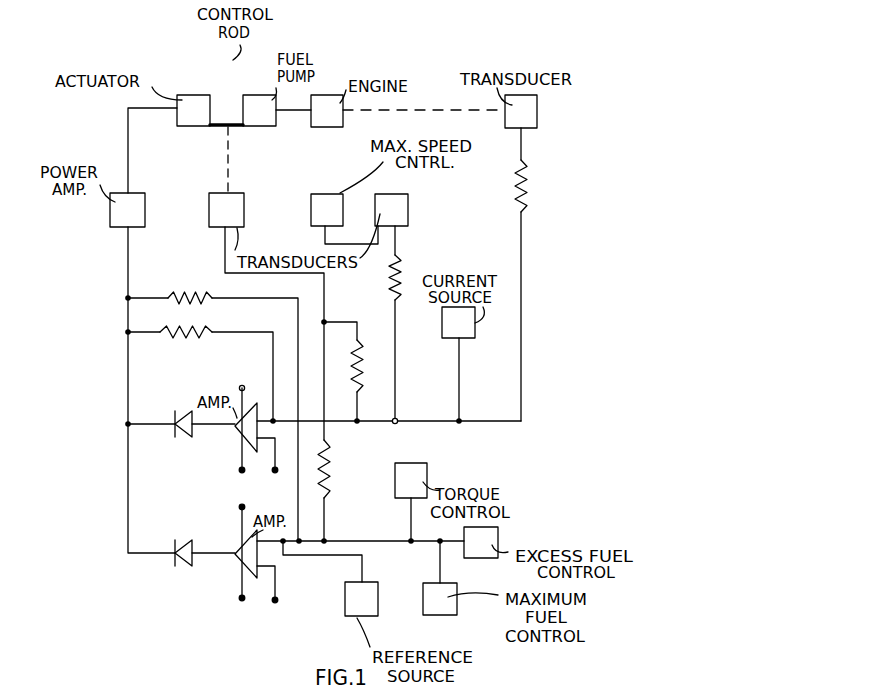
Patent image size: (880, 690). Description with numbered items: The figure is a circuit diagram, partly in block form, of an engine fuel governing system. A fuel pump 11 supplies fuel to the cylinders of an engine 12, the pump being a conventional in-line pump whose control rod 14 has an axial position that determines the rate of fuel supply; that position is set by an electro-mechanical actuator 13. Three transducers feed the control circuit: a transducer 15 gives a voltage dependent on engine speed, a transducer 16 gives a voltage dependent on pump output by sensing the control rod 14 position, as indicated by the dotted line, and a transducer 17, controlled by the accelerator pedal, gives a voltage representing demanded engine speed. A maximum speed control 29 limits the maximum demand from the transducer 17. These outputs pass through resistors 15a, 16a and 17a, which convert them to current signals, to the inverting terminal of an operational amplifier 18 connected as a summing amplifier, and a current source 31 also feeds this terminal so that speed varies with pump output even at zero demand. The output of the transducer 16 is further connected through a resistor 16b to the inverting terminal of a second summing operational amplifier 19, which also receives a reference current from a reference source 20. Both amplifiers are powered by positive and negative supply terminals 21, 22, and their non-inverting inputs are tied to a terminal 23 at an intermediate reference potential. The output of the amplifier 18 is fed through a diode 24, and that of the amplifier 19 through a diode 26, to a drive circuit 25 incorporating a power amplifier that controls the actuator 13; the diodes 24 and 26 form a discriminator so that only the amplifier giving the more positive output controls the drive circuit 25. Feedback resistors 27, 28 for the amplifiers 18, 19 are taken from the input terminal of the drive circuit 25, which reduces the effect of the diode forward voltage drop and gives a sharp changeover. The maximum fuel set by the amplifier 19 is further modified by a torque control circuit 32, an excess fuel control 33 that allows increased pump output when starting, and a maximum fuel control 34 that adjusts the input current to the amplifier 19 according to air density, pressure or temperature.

The fuel pump 11 is at (257, 103).
The engine 12 is at (329, 103).
The electro-mechanical actuator 13 is at (192, 102).
The control rod 14 is at (222, 118).
The transducer 15 is at (528, 113).
The resistor 15a is at (527, 190).
The transducer 16 is at (242, 202).
The resistor 16a is at (363, 387).
The resistor 16b is at (333, 492).
The transducer 17 is at (398, 210).
The resistor 17a is at (403, 262).
The operational amplifier 18 is at (238, 436).
The operational amplifier 19 is at (238, 563).
The reference source 20 is at (360, 608).
The positive supply terminal 21 is at (239, 387).
The negative supply terminal 22 is at (240, 472).
The terminal 23 is at (275, 472).
The diode 24 is at (177, 448).
The drive circuit 25 is at (130, 202).
The diode 26 is at (185, 573).
The feedback resistor 27 is at (190, 340).
The feedback resistor 28 is at (183, 288).
The maximum speed control 29 is at (322, 203).
The current source 31 is at (457, 330).
The torque control circuit 32 is at (425, 470).
The excess fuel control 33 is at (493, 535).
The maximum fuel control 34 is at (447, 610).